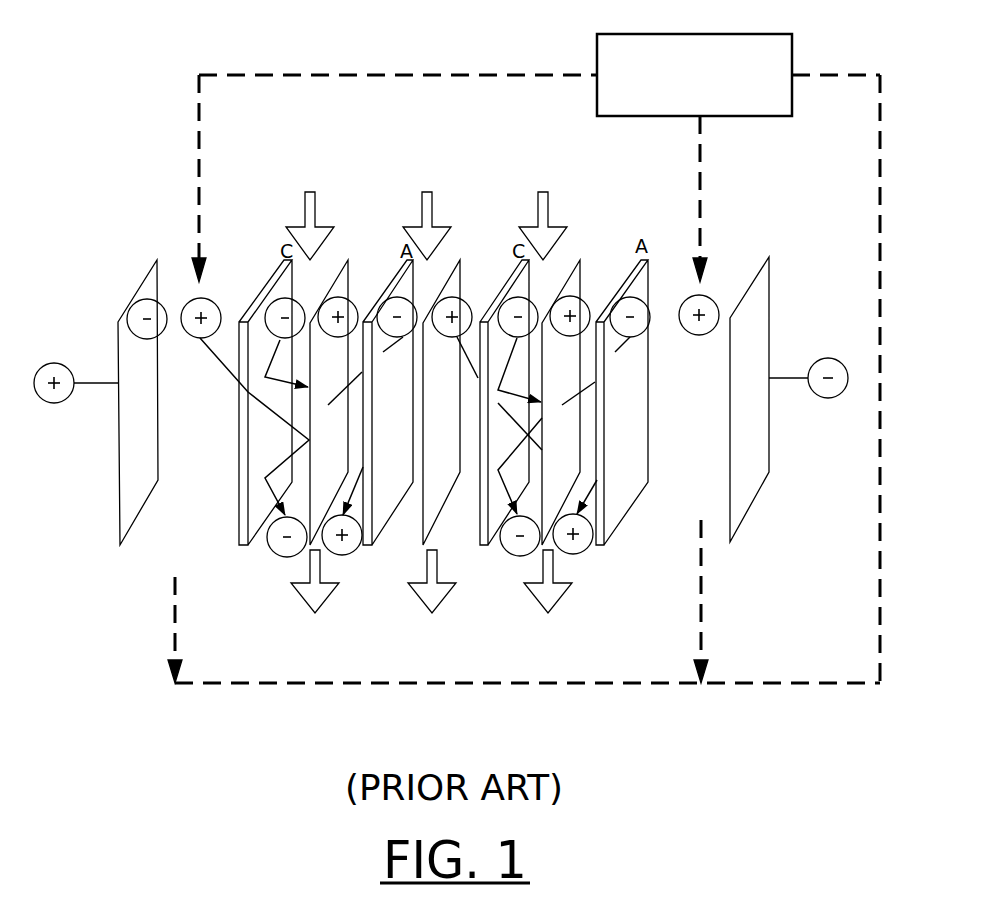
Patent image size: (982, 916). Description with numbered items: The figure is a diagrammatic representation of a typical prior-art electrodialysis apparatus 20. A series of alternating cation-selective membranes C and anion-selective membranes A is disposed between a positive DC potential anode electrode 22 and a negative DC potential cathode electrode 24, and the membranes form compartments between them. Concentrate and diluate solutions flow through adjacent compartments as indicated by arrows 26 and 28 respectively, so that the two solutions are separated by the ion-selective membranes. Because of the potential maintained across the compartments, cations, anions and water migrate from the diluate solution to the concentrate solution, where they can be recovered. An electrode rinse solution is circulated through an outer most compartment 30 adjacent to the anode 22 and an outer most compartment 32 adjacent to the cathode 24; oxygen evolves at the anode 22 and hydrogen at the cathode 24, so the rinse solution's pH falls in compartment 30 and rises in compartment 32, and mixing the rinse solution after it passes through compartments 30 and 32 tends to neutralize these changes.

The electrodialysis apparatus 20 is at (160, 105).
The anode electrode 22 is at (117, 485).
The cathode electrode 24 is at (769, 438).
The concentrate solution flow arrows 26 is at (428, 404).
The diluate solution flow arrows 28 is at (429, 403).
The outer most compartment adjacent the anode 30 is at (172, 470).
The outer most compartment adjacent the cathode 32 is at (706, 480).